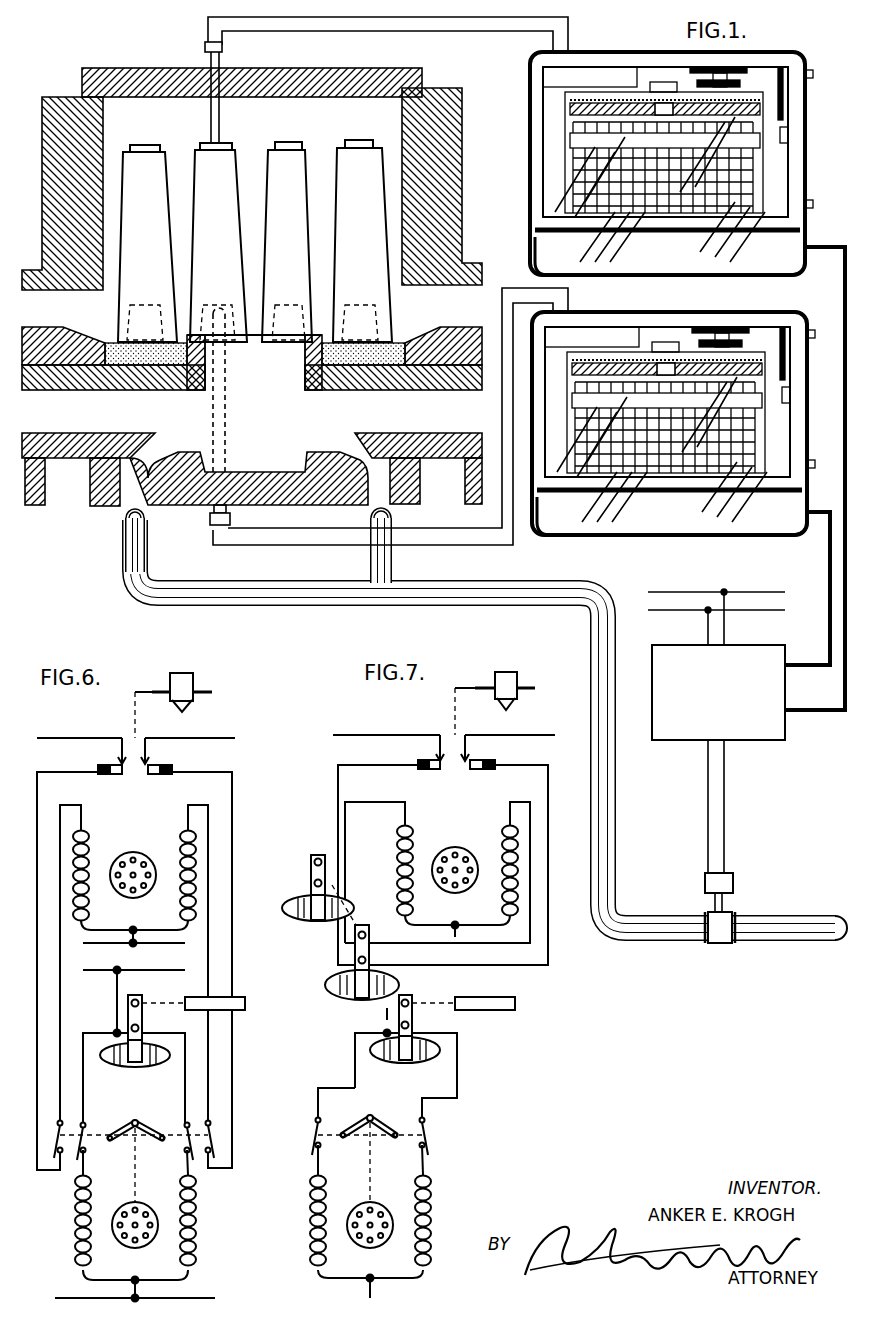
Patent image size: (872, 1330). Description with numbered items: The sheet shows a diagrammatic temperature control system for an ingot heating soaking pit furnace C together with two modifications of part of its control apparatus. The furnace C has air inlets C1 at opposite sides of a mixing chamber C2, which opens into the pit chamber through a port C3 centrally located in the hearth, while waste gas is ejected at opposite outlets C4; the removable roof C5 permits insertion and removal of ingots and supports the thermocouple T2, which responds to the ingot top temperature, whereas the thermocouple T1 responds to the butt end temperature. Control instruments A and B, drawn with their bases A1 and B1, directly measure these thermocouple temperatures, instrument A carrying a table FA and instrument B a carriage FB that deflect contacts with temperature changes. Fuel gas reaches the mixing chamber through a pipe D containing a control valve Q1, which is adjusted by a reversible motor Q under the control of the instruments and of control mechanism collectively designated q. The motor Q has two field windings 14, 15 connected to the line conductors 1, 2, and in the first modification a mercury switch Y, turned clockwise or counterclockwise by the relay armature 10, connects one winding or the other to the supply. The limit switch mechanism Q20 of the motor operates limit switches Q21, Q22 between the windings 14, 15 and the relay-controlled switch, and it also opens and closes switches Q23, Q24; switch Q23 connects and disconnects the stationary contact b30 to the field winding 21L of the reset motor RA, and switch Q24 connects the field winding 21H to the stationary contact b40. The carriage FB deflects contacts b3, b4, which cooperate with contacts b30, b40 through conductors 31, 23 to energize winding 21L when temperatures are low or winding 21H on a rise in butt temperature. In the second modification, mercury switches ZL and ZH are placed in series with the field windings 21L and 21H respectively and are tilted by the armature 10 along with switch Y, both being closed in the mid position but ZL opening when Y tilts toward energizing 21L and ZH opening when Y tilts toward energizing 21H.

In FIG. 1, the furnace C is at (52, 186).
In FIG. 1, the air inlet C1 is at (252, 450).
In FIG. 1, the mixing chamber C2 is at (272, 426).
In FIG. 1, the port C3 is at (255, 362).
In FIG. 1, the waste gas outlet C4 is at (252, 340).
In FIG. 1, the roof C5 is at (97, 80).
In FIG. 1, the thermocouple T1 is at (225, 423).
In FIG. 1, the thermocouple T2 is at (222, 130).
In FIG. 1, the control instrument A is at (530, 95).
In FIG. 1, the controller A base A1 is at (670, 256).
In FIG. 1, the table FA is at (663, 103).
In FIG. 1, the control instrument B is at (616, 296).
In FIG. 1, the controller B base B1 is at (672, 516).
In FIG. 1, the carriage FB is at (672, 363).
In FIG. 6, the carriage FB is at (176, 675).
In FIG. 7, the carriage FB is at (499, 672).
In FIG. 1, the pipe D is at (292, 590).
In FIG. 1, the control mechanism q is at (718, 692).
In FIG. 1, the motor Q is at (706, 880).
In FIG. 6, the motor Q is at (130, 1214).
In FIG. 7, the motor Q is at (366, 1213).
In FIG. 1, the control valve Q1 is at (737, 918).
In FIG. 6, the conductor 31 is at (55, 738).
In FIG. 7, the conductor 31 is at (363, 735).
In FIG. 6, the conductor 23 is at (183, 738).
In FIG. 7, the conductor 23 is at (510, 735).
In FIG. 6, the contact b3 is at (121, 763).
In FIG. 7, the contact b3 is at (439, 760).
In FIG. 6, the contact b4 is at (150, 763).
In FIG. 7, the contact b4 is at (468, 760).
In FIG. 6, the stationary contact b30 is at (111, 774).
In FIG. 7, the stationary contact b30 is at (436, 770).
In FIG. 6, the stationary contact b40 is at (162, 774).
In FIG. 7, the stationary contact b40 is at (485, 770).
In FIG. 6, the reset motor RA is at (95, 870).
In FIG. 7, the reset motor RA is at (423, 866).
In FIG. 6, the field winding 21H is at (180, 852).
In FIG. 7, the field winding 21H is at (502, 850).
In FIG. 6, the field winding 21L is at (89, 890).
In FIG. 7, the field winding 21L is at (413, 890).
In FIG. 6, the line conductor 1 is at (106, 946).
In FIG. 7, the line conductor 1 is at (455, 936).
In FIG. 6, the line conductor 2 is at (139, 970).
In FIG. 7, the line conductor 2 is at (385, 1013).
In FIG. 6, the armature 10 is at (236, 998).
In FIG. 7, the armature 10 is at (496, 998).
In FIG. 6, the mercury switch Y is at (114, 1062).
In FIG. 7, the mercury switch Y is at (386, 1060).
In FIG. 6, the limit switch mechanism Q20 is at (134, 1120).
In FIG. 7, the limit switch mechanism Q20 is at (366, 1118).
In FIG. 6, the limit switch Q21 is at (86, 1125).
In FIG. 7, the limit switch Q21 is at (316, 1136).
In FIG. 6, the limit switch Q22 is at (186, 1126).
In FIG. 7, the limit switch Q22 is at (428, 1135).
In FIG. 6, the switch Q23 is at (57, 1141).
In FIG. 6, the switch Q24 is at (217, 1138).
In FIG. 6, the field winding 14 is at (73, 1243).
In FIG. 6, the field winding 15 is at (198, 1222).
In FIG. 7, the mercury switch ZL is at (288, 914).
In FIG. 7, the mercury switch ZH is at (338, 992).